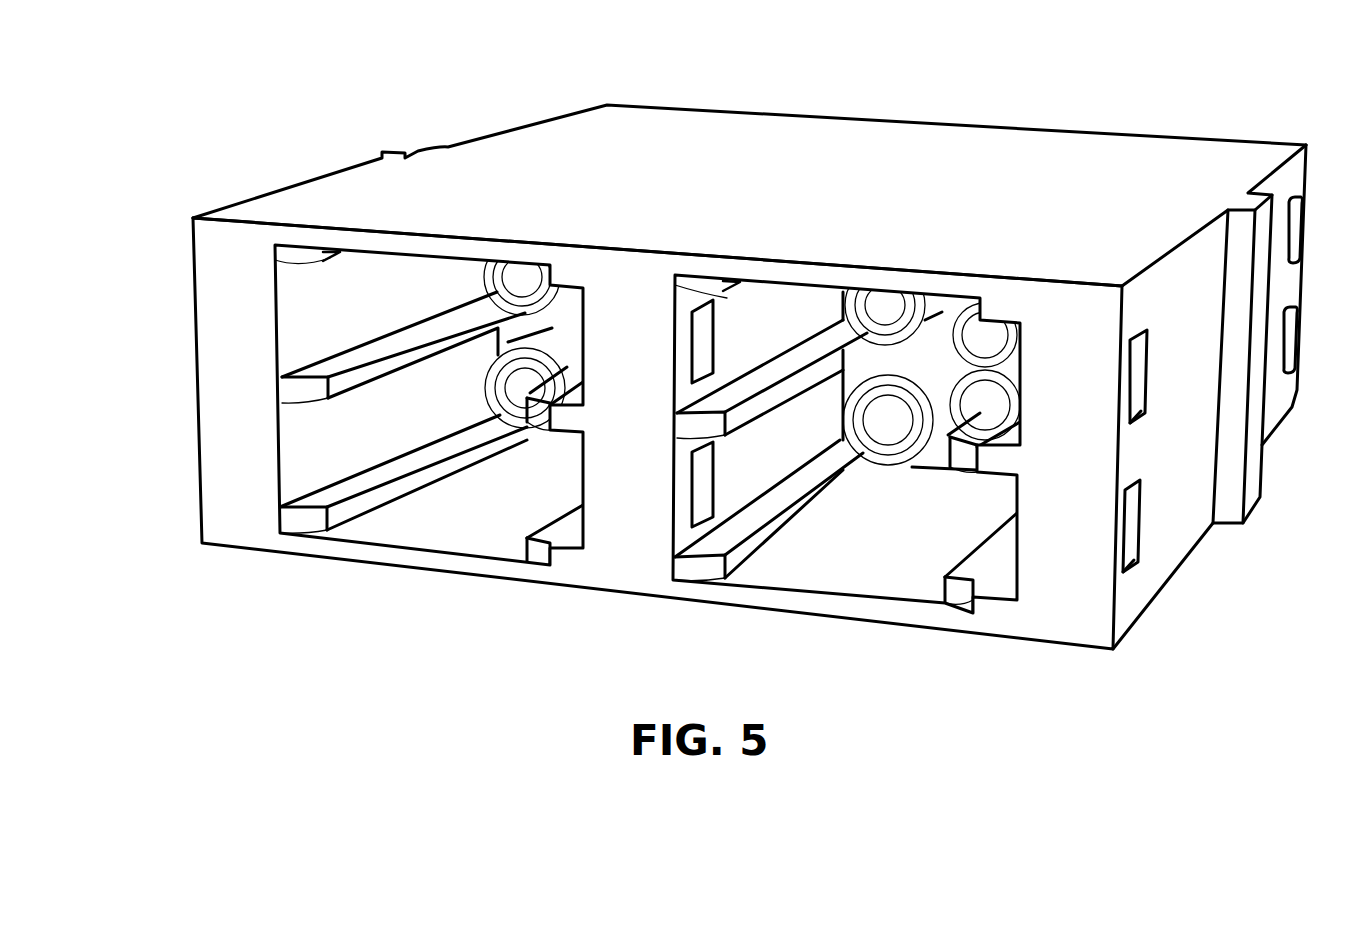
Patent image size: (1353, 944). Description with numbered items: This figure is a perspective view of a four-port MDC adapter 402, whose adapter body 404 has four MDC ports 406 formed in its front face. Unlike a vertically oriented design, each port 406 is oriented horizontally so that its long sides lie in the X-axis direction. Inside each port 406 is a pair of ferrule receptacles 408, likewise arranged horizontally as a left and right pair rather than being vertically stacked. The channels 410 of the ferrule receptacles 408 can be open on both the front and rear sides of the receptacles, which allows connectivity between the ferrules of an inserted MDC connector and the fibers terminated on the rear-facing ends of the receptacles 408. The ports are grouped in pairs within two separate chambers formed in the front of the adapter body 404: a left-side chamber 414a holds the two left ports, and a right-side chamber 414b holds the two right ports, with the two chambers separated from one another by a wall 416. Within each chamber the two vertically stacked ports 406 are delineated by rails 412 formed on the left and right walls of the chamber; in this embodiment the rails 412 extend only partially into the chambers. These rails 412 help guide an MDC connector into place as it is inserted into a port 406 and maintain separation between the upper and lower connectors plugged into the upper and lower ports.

The four-port MDC adapter 402 is at (327, 92).
The adapter body 404 is at (1020, 170).
The MDC port 406 is at (318, 290).
The ferrule receptacle 408 is at (523, 388).
The channel 410 is at (498, 380).
The rail 412 is at (542, 413).
The left-side chamber 414a is at (420, 503).
The right-side chamber 414b is at (837, 552).
The wall 416 is at (617, 513).